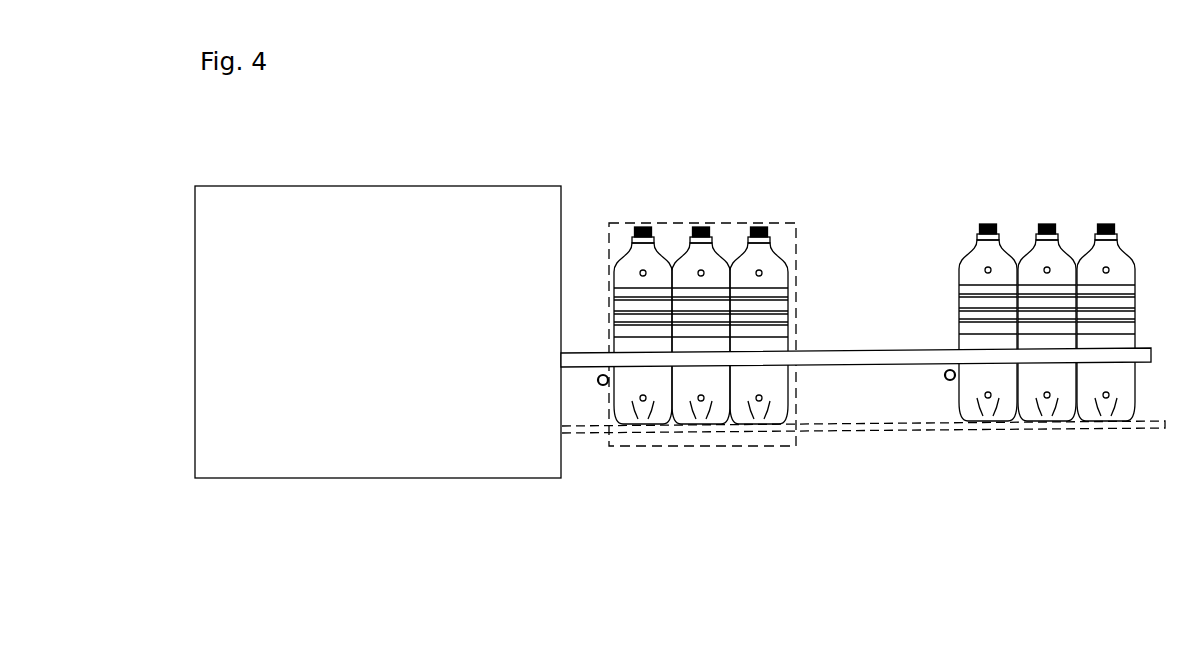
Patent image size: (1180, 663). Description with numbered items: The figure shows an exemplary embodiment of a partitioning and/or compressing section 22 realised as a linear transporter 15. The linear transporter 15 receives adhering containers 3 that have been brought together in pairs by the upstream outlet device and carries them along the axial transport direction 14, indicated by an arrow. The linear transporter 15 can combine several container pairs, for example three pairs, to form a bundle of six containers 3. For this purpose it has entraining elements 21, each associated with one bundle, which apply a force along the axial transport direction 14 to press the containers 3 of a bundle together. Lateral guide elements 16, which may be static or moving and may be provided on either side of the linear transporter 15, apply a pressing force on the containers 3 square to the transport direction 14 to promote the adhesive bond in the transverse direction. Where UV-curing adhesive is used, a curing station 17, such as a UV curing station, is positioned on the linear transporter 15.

The container 3 is at (677, 213).
The axial transport direction 14 is at (1052, 138).
The linear transporter 15 is at (871, 223).
The guide element 16 is at (849, 356).
The curing station 17 is at (679, 447).
The entraining element 21 is at (597, 382).
The partitioning and/or compressing section 22 is at (530, 543).